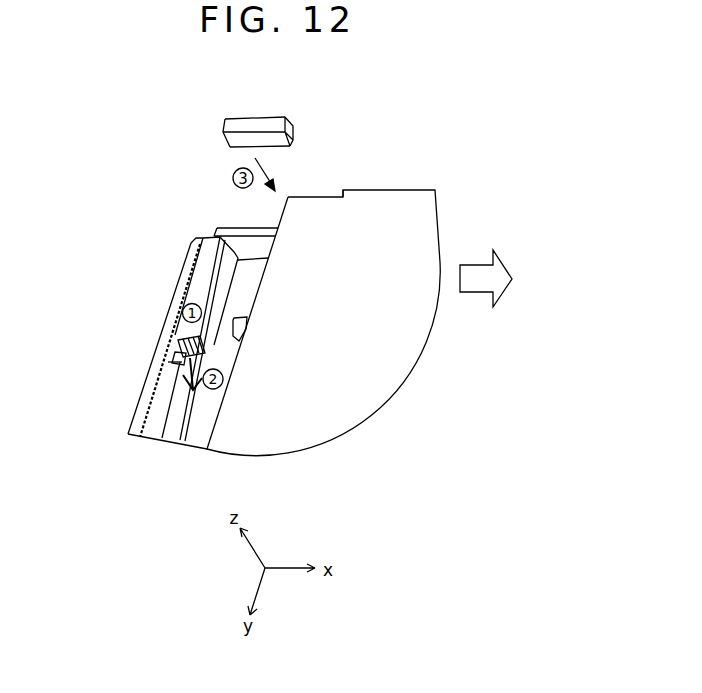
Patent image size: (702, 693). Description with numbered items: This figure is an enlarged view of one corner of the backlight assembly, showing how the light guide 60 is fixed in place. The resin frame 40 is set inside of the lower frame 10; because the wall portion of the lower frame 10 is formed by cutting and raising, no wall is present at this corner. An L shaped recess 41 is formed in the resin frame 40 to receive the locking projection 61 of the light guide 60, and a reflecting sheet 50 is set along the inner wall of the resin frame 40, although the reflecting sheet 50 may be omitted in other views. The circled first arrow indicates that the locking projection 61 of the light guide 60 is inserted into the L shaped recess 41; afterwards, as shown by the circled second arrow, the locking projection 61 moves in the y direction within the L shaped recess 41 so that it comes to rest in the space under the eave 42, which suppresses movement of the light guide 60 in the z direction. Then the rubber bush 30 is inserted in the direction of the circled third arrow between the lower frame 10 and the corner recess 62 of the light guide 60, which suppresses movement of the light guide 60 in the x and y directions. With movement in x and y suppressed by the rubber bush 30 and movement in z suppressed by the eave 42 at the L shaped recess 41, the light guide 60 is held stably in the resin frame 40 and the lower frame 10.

The lower frame 10 is at (175, 288).
The rubber bush 30 is at (258, 122).
The resin frame 40 is at (208, 265).
The L shaped recess 41 is at (178, 341).
The eave 42 is at (176, 364).
The reflecting sheet 50 is at (178, 416).
The light guide 60 is at (393, 195).
The locking projection 61 is at (246, 332).
The corner recess 62 is at (326, 195).